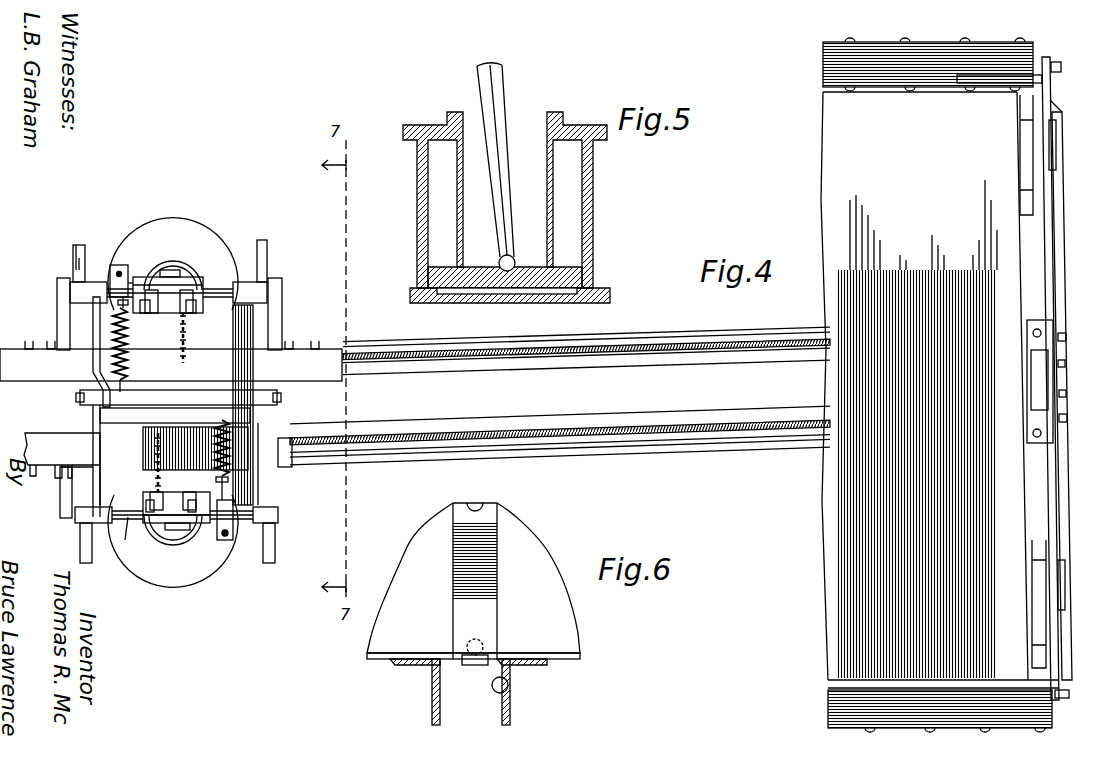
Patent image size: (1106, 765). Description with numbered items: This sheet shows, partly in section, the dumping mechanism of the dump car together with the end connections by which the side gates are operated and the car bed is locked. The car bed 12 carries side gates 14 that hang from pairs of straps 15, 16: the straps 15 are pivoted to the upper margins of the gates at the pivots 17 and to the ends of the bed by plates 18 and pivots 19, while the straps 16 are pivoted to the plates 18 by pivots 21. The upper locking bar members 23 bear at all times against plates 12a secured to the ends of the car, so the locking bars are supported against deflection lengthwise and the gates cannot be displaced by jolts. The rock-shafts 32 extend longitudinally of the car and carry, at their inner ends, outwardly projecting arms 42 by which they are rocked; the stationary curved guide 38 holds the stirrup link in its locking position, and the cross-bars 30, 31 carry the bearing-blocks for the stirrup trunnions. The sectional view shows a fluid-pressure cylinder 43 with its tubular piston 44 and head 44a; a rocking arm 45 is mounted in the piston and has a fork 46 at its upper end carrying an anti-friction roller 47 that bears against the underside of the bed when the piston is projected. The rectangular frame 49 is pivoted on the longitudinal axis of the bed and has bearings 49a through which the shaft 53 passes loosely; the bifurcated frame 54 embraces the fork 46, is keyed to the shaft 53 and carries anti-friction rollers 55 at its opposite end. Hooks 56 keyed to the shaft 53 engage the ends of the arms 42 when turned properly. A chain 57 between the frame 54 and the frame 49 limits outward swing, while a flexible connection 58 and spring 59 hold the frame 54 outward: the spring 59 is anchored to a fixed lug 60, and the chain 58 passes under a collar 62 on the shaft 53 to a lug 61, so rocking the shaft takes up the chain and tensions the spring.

In FIG. 4, the car bed 12 is at (1030, 472).
In FIG. 4, the plate 12a is at (1032, 560).
In FIG. 4, the side gate 14 is at (940, 65).
In FIG. 4, the strap 15 is at (1050, 96).
In FIG. 4, the strap 16 is at (1058, 129).
In FIG. 4, the pivot 17 is at (1058, 64).
In FIG. 4, the plate 18 is at (1055, 380).
In FIG. 4, the pivot 19 is at (1066, 337).
In FIG. 4, the pivot 21 is at (1065, 363).
In FIG. 4, the upper locking bar member 23 is at (1057, 165).
In FIG. 6, the cross-bar 30 is at (430, 700).
In FIG. 6, the cross-bar 31 is at (511, 710).
In FIG. 4, the rock-shaft 32 is at (416, 346).
In FIG. 6, the stationary curved guide 38 is at (452, 624).
In FIG. 4, the arm 42 is at (57, 295).
In FIG. 4, the fluid-pressure cylinder 43 is at (160, 222).
In FIG. 5, the fluid-pressure cylinder 43 is at (590, 208).
In FIG. 5, the tubular piston 44 is at (455, 238).
In FIG. 5, the piston head 44a is at (565, 265).
In FIG. 5, the rocking arm 45 is at (500, 91).
In FIG. 4, the fork 46 is at (175, 265).
In FIG. 4, the anti-friction roller 47 is at (252, 414).
In FIG. 4, the frame 49 is at (270, 352).
In FIG. 4, the bearing 49a is at (262, 578).
In FIG. 4, the shaft 53 is at (126, 525).
In FIG. 4, the bifurcated frame 54 is at (215, 290).
In FIG. 4, the anti-friction roller 55 is at (148, 290).
In FIG. 4, the hook 56 is at (73, 250).
In FIG. 4, the chain 57 is at (186, 335).
In FIG. 4, the flexible connection 58 is at (128, 310).
In FIG. 4, the spring 59 is at (113, 362).
In FIG. 4, the lug 60 is at (178, 401).
In FIG. 4, the lug 61 is at (220, 540).
In FIG. 4, the collar 62 is at (118, 275).